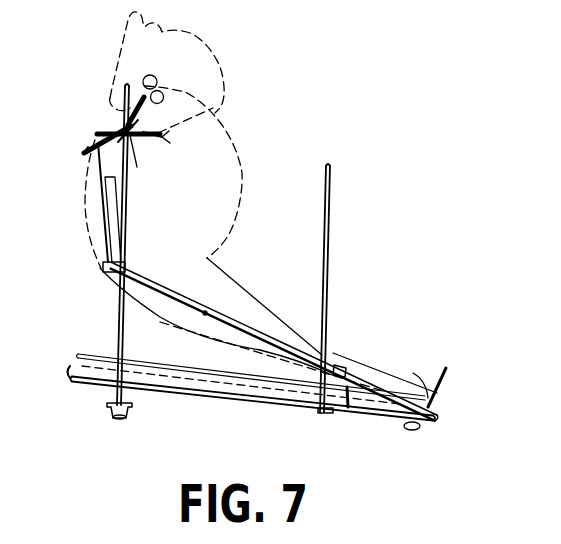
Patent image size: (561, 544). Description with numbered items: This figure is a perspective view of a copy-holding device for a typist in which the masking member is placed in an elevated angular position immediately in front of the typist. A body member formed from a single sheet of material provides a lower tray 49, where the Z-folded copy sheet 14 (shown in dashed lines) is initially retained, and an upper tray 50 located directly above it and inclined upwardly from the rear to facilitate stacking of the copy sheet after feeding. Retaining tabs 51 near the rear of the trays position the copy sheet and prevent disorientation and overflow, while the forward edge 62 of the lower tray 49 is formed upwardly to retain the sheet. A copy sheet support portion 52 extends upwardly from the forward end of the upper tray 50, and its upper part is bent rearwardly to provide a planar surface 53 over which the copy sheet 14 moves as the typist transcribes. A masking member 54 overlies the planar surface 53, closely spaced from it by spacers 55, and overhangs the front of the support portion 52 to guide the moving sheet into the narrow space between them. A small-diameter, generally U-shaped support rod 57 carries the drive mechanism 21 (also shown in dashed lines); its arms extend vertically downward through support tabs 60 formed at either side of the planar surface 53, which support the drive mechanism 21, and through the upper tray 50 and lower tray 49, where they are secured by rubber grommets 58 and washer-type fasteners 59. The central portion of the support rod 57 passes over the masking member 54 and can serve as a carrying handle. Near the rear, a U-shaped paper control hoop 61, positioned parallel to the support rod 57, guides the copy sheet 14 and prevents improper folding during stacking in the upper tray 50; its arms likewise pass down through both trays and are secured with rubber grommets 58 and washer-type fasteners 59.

The copy sheet 14 is at (87, 228).
The drive mechanism 21 is at (216, 111).
The lower tray 49 is at (215, 400).
The upper tray 50 is at (205, 311).
The retaining tabs 51 is at (352, 392).
The copy sheet support portion 52 is at (98, 168).
The planar surface 53 is at (138, 136).
The masking member 54 is at (87, 148).
The spacers 55 is at (100, 132).
The support rod 57 is at (127, 208).
The rubber grommets 58 is at (362, 347).
The washer-type fasteners 59 is at (113, 390).
The support tabs 60 is at (163, 136).
The paper control hoop 61 is at (331, 220).
The forward edge 62 is at (66, 371).